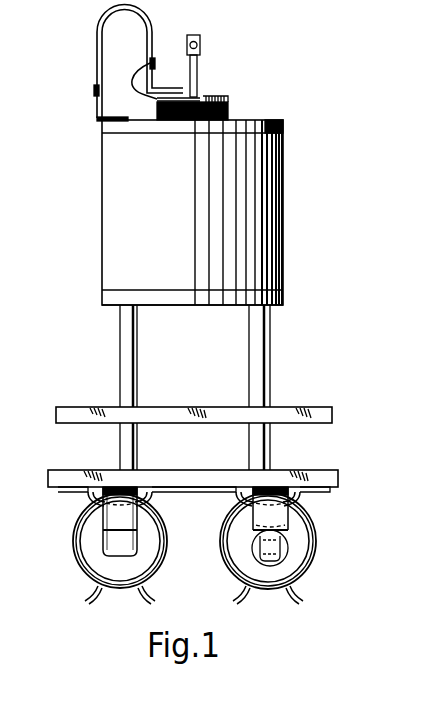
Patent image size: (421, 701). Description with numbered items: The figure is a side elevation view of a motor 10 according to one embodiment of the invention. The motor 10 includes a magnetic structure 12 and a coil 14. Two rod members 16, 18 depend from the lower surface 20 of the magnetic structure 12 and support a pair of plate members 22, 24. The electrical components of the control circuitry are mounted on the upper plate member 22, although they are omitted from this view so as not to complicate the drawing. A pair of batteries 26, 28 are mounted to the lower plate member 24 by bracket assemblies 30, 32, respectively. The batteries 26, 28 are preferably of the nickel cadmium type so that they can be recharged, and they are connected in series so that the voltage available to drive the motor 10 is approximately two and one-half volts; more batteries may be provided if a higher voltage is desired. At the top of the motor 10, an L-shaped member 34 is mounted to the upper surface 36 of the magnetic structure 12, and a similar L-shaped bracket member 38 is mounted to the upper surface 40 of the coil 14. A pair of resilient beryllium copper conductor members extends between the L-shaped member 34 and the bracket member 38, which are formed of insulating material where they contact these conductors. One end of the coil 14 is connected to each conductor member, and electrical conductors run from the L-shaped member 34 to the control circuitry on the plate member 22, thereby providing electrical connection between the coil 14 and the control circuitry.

The motor 10 is at (217, 197).
The magnetic structure 12 is at (286, 180).
The coil 14 is at (229, 112).
The rod member 16 is at (138, 367).
The rod member 18 is at (249, 362).
The lower surface 20 is at (185, 306).
The plate member 22 is at (208, 386).
The plate member 24 is at (205, 470).
The battery 26 is at (120, 557).
The battery 28 is at (268, 559).
The bracket assembly 30 is at (97, 550).
The bracket assembly 32 is at (292, 553).
The L-shaped member 34 is at (97, 119).
The upper surface 36 is at (270, 120).
The L-shaped bracket member 38 is at (158, 62).
The upper surface 40 is at (215, 98).